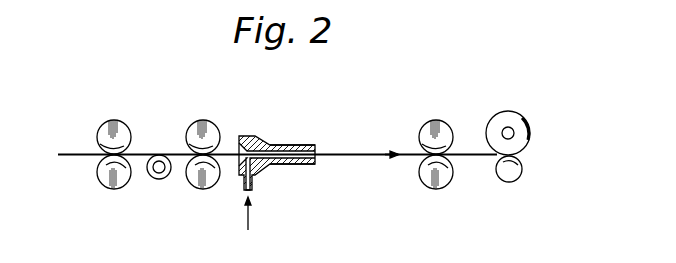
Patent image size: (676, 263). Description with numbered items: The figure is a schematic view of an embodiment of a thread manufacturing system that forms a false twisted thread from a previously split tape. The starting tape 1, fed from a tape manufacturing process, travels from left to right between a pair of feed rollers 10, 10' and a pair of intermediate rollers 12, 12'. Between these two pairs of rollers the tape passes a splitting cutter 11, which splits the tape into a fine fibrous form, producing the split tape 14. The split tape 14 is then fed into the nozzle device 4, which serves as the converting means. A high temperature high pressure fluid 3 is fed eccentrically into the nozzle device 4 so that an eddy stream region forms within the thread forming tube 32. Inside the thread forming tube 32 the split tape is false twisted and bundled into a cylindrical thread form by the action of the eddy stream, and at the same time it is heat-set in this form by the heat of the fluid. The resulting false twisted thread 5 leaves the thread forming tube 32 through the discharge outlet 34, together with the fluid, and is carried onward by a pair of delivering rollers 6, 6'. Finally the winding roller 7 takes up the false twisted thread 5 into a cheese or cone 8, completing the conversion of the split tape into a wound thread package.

The tape 1 is at (70, 152).
The high temperature high pressure fluid 3 is at (249, 214).
The nozzle device 4 is at (261, 141).
The false twisted thread 5 is at (358, 154).
The delivering roller 6 is at (445, 123).
The delivering roller 6' is at (448, 191).
The winding roller 7 is at (519, 180).
The cheese or cone 8 is at (529, 125).
The feed roller 10 is at (129, 119).
The feed roller 10' is at (97, 188).
The splitting cutter 11 is at (157, 179).
The intermediate roller 12 is at (194, 119).
The intermediate roller 12' is at (210, 190).
The split tape 14 is at (231, 152).
The thread forming tube 32 is at (298, 146).
The discharge outlet 34 is at (316, 160).